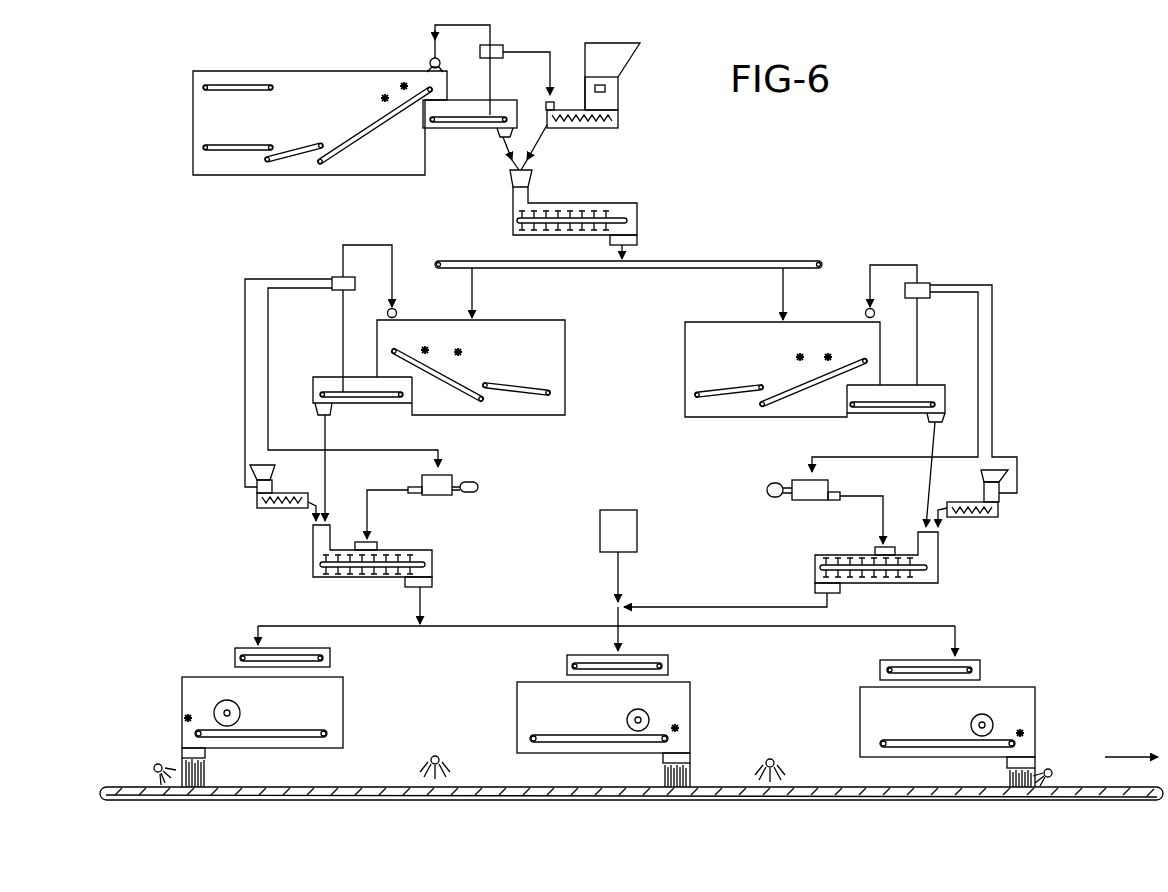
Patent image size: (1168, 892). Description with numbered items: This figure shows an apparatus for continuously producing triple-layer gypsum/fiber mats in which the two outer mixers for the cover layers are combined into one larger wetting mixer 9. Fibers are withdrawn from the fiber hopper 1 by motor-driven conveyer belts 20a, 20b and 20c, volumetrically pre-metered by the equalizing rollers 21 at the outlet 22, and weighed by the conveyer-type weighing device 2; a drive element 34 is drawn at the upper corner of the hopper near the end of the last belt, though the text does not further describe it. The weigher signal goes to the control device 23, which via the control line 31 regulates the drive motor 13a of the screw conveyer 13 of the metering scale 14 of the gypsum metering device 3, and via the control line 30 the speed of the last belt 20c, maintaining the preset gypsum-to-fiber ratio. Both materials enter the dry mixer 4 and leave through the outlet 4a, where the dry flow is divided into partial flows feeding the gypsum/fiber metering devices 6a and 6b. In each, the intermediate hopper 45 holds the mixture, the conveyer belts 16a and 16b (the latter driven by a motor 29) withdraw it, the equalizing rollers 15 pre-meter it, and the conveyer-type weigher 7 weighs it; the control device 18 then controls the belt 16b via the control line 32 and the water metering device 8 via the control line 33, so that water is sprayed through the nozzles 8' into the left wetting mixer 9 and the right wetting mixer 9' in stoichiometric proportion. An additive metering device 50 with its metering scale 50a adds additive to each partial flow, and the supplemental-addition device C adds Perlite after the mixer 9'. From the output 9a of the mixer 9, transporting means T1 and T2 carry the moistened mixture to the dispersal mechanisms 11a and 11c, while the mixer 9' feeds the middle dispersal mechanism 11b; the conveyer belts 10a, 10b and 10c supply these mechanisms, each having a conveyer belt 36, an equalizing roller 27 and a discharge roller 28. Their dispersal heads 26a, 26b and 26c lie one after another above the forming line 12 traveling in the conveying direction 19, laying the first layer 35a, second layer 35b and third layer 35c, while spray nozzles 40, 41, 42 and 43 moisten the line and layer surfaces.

The fiber hopper 1 is at (324, 78).
The weighing device 2 is at (478, 126).
The device for measuring out gypsum 3 is at (625, 58).
The dry mixer 4 is at (583, 208).
The outlet of the dry mixer 4a is at (623, 237).
The gypsum/fiber metering device 6a is at (555, 316).
The gypsum/fiber metering device 6b is at (690, 318).
The conveyer-type weigher 7 is at (312, 385).
The device for measuring out water 8 is at (625, 509).
The nozzles 8' is at (625, 532).
The wetting mixer 9 is at (391, 551).
The wetting mixer 9' is at (854, 557).
The output of the wetting mixer 9a is at (410, 584).
The conveyer belt 10a is at (330, 660).
The conveyer belt 10b is at (567, 664).
The conveyer belt 10c is at (880, 668).
The dispersal mechanism 11a is at (345, 716).
The dispersal mechanism 11b is at (692, 718).
The dispersal mechanism 11c is at (1037, 725).
The forming line 12 is at (493, 786).
The screw conveyer 13 is at (592, 128).
The drive motor 13a is at (547, 102).
The metering scale 14 is at (620, 100).
The equalizing rollers 15 is at (457, 348).
The conveyer belt 16a is at (533, 386).
The conveyer belt 16b is at (466, 385).
The control device 18 is at (334, 290).
The conveying direction 19 is at (1136, 753).
The conveyer belt 20a is at (232, 143).
The conveyer belt 20b is at (293, 150).
The conveyer belt 20c is at (370, 126).
The equalizing rollers 21 is at (402, 82).
The outlet 22 is at (441, 84).
The control device 23 is at (500, 48).
The dispersal head 26a is at (206, 754).
The dispersal head 26b is at (663, 760).
The dispersal head 26c is at (1007, 763).
The equalizing roller 27 is at (238, 705).
The discharge roller 28 is at (186, 712).
The motor 29 is at (397, 310).
The control line 30 is at (431, 40).
The control line 31 is at (550, 52).
The control line 32 is at (343, 253).
The control line 33 is at (268, 336).
The motor 34 is at (441, 62).
The first layer 35a is at (305, 787).
The second layer 35b is at (718, 787).
The third layer 35c is at (1122, 788).
The conveyer belt 36 is at (280, 728).
The spray nozzle 40 is at (155, 764).
The spray nozzle 41 is at (435, 756).
The spray nozzle 42 is at (773, 759).
The spray nozzle 43 is at (1051, 770).
The intermediate hopper 45 is at (522, 320).
The device for measuring out additive 50 is at (275, 514).
The metering scale 50a is at (270, 486).
The supplemental-addition device C is at (638, 530).
The transporting means T1 is at (302, 625).
The transporting means T2 is at (512, 625).